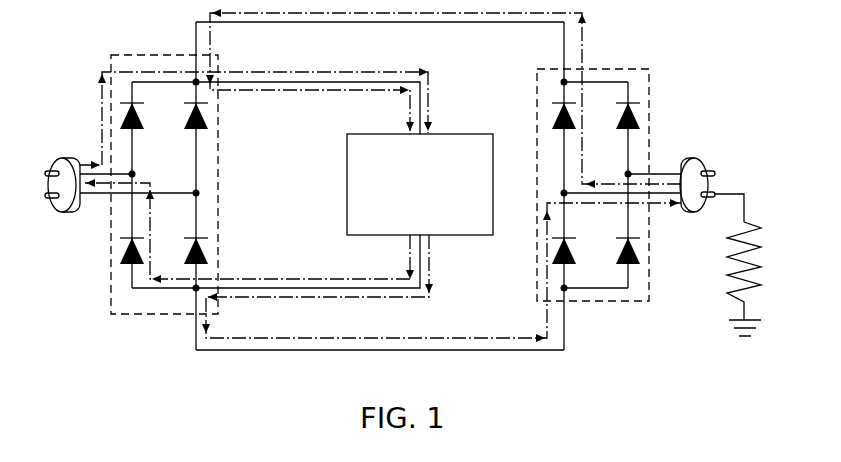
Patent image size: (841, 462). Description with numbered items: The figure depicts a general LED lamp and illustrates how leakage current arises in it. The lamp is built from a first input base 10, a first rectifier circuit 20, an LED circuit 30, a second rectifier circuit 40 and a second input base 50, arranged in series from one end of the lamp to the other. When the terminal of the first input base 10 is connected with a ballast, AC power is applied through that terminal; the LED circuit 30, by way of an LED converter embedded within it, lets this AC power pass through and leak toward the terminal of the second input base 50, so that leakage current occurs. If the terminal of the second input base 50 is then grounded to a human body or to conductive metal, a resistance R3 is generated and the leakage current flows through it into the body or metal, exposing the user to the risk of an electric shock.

The first input base 10 is at (62, 157).
The first rectifier circuit 20 is at (145, 55).
The LED circuit 30 is at (467, 133).
The second rectifier circuit 40 is at (610, 69).
The second input base 50 is at (690, 157).
The resistance R3 is at (729, 279).